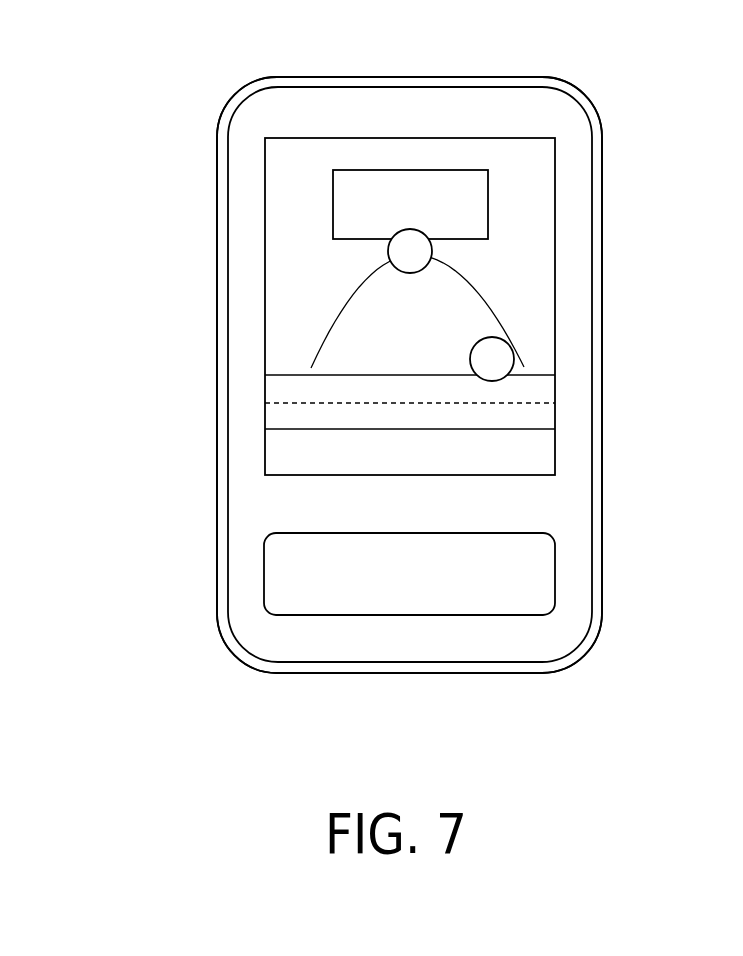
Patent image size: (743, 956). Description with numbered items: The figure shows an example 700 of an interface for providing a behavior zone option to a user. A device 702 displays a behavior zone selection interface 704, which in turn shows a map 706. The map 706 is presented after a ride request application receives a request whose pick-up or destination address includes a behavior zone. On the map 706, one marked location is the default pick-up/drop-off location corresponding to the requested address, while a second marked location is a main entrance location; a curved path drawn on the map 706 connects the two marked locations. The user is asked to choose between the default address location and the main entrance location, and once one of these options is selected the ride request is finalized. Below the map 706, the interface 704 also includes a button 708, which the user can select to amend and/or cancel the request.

The example of an interface for providing a behavior zone option 700 is at (226, 50).
The device 702 is at (535, 75).
The behavior zone selection interface 704 is at (606, 149).
The map 706 is at (570, 281).
The button 708 is at (570, 568).